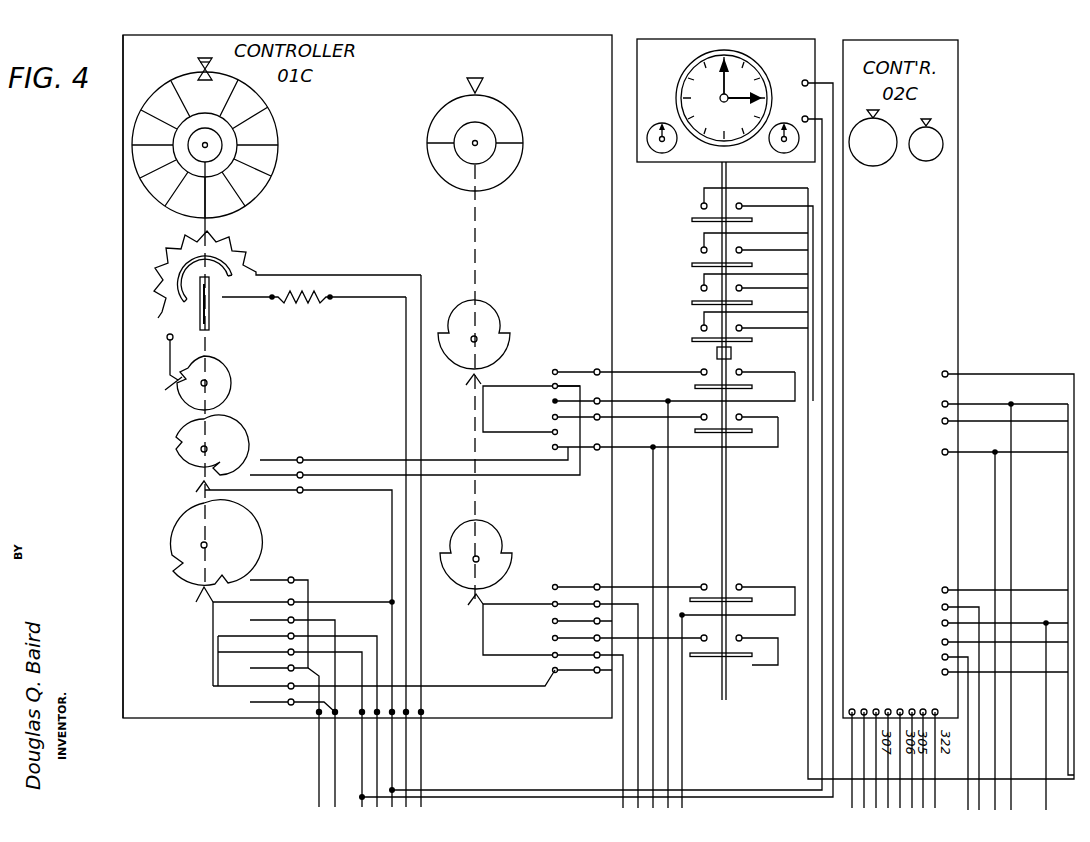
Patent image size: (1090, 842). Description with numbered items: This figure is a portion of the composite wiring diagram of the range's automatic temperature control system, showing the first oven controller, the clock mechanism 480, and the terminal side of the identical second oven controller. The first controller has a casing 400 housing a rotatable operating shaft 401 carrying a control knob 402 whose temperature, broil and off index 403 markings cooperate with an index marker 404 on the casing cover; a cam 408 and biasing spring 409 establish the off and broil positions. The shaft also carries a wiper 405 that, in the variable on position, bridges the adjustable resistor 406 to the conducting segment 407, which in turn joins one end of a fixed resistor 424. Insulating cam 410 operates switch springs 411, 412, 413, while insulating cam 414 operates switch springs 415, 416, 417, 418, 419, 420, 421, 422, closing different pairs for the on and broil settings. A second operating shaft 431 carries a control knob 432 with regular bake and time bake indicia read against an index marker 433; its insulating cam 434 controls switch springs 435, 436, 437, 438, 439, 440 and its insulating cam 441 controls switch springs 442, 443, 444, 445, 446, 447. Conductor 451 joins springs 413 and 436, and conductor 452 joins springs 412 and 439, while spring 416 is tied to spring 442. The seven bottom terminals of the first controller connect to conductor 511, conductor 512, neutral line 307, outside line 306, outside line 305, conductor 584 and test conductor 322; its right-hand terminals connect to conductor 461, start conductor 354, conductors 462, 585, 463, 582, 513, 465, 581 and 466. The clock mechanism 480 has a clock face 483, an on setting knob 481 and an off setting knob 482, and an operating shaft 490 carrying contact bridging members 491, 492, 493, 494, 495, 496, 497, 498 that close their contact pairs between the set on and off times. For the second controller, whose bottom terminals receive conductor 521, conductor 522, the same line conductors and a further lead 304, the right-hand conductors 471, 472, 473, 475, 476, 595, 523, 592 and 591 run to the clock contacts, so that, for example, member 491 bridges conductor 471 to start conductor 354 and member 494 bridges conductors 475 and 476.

The casing 400 is at (123, 365).
The operating shaft 401 is at (200, 416).
The control knob 402 is at (272, 185).
The off index 403 is at (198, 72).
The index marker 404 is at (200, 62).
The wiper 405 is at (209, 318).
The adjustable resistor 406 is at (245, 246).
The conducting segment 407 is at (172, 262).
The cam 408 is at (236, 380).
The biasing spring 409 is at (170, 356).
The insulating cam 410 is at (222, 436).
The switch spring 411 is at (298, 592).
The switch spring 412 is at (246, 472).
The switch spring 413 is at (256, 458).
The insulating cam 414 is at (232, 545).
The switch spring 415 is at (246, 704).
The switch spring 416 is at (384, 679).
The switch spring 417 is at (246, 670).
The switch spring 418 is at (290, 673).
The switch spring 419 is at (246, 630).
The switch spring 420 is at (292, 657).
The switch spring 421 is at (246, 596).
The switch spring 422 is at (246, 580).
The fixed resistor 424 is at (316, 303).
The operating shaft 431 is at (492, 382).
The control knob 432 is at (505, 180).
The index marker 433 is at (466, 90).
The insulating cam 434 is at (481, 325).
The switch spring 435 is at (513, 450).
The switch spring 436 is at (513, 424).
The switch spring 437 is at (611, 411).
The switch spring 438 is at (513, 404).
The switch spring 439 is at (513, 378).
The switch spring 440 is at (611, 365).
The insulating cam 441 is at (481, 546).
The switch spring 442 is at (513, 672).
The switch spring 443 is at (513, 646).
The switch spring 444 is at (611, 631).
The switch spring 445 is at (513, 623).
The switch spring 446 is at (513, 595).
The switch spring 447 is at (611, 580).
The conductor 451 is at (366, 460).
The conductor 452 is at (366, 475).
The conductor 461 is at (660, 372).
The conductor 462 is at (660, 417).
The conductor 463 is at (660, 587).
The conductor 465 is at (660, 638).
The conductor 466 is at (488, 686).
The conductor 471 is at (786, 188).
The conductor 472 is at (786, 233).
The conductor 473 is at (786, 274).
The conductor 475 is at (786, 312).
The conductor 476 is at (786, 328).
The clock mechanism 480 is at (680, 66).
The on clock time setting knob 481 is at (659, 152).
The off clock time setting knob 482 is at (778, 145).
The clock face 483 is at (752, 76).
The operating shaft 490 is at (727, 500).
The contact bridging member 491 is at (692, 219).
The contact bridging member 492 is at (692, 264).
The contact bridging member 493 is at (692, 302).
The contact bridging member 494 is at (692, 340).
The contact bridging member 495 is at (752, 387).
The contact bridging member 496 is at (752, 433).
The contact bridging member 497 is at (737, 598).
The contact bridging member 498 is at (727, 657).
The conductor 511 is at (326, 758).
The conductor 512 is at (342, 758).
The conductor 513 is at (755, 590).
The conductor 521 is at (859, 758).
The conductor 522 is at (871, 758).
The conductor 523 is at (786, 288).
The conductor 581 is at (633, 742).
The conductor 582 is at (648, 742).
The conductor 584 is at (413, 552).
The conductor 585 is at (660, 447).
The conductor 591 is at (964, 732).
The conductor 592 is at (969, 707).
The conductor 595 is at (786, 250).
The terminal lead 304 is at (933, 742).
The outside line 305 is at (605, 463).
The outside line 306 is at (384, 758).
The neutral line 307 is at (596, 445).
The test conductor 322 is at (428, 541).
The start conductor 354 is at (660, 401).